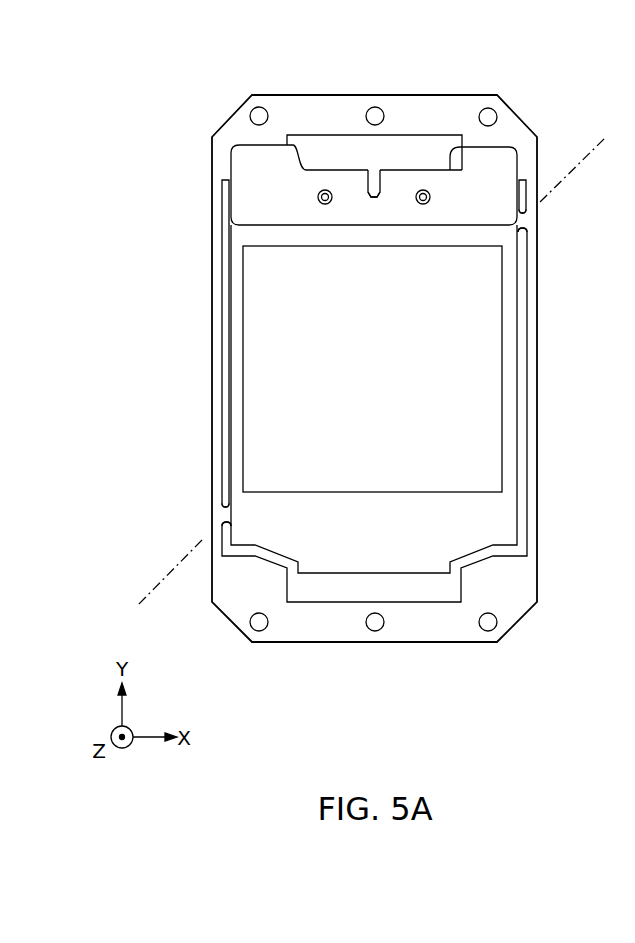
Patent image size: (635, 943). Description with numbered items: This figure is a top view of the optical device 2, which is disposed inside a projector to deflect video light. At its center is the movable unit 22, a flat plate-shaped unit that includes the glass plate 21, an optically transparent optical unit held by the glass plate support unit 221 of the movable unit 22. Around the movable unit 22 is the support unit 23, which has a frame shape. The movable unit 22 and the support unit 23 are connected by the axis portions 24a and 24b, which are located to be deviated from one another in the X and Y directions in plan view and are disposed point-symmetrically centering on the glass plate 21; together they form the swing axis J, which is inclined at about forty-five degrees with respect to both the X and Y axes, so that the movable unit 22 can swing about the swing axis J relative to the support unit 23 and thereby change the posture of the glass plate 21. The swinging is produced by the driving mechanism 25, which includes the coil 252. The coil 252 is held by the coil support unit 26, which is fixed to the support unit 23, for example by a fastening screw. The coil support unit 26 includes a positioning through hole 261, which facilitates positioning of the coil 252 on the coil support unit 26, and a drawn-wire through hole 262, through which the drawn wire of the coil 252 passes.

The optical device 2 is at (245, 70).
The glass plate 21 is at (267, 362).
The movable unit 22 is at (240, 437).
The glass plate support unit 221 is at (232, 277).
The support unit 23 is at (538, 504).
The axis portion 24a is at (522, 220).
The axis portion 24b is at (227, 515).
The driving mechanism 25 is at (333, 158).
The coil 252 is at (375, 170).
The coil support unit 26 is at (465, 213).
The positioning through hole 261 is at (318, 197).
The drawn-wire through hole 262 is at (375, 199).
The swing axis J is at (376, 369).